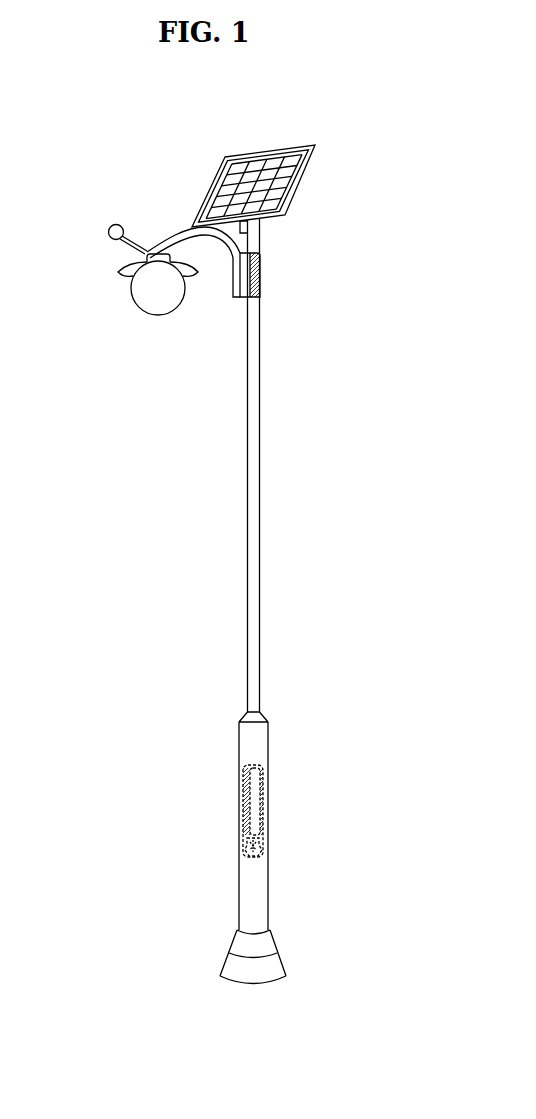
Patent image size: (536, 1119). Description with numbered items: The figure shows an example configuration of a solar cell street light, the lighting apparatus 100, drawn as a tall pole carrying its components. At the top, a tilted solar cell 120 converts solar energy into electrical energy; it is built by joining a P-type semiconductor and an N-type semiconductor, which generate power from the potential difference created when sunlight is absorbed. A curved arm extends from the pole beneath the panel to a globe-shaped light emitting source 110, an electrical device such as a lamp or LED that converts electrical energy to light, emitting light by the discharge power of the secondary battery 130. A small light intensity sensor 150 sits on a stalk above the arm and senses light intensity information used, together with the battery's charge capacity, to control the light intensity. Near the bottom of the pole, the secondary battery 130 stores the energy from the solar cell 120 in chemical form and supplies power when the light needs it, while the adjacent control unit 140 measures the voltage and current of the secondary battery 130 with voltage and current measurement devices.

The lighting apparatus 100 is at (346, 119).
The light emitting source 110 is at (131, 287).
The solar cell 120 is at (217, 173).
The secondary battery 130 is at (262, 801).
The control unit 140 is at (262, 853).
The light intensity sensor 150 is at (108, 232).